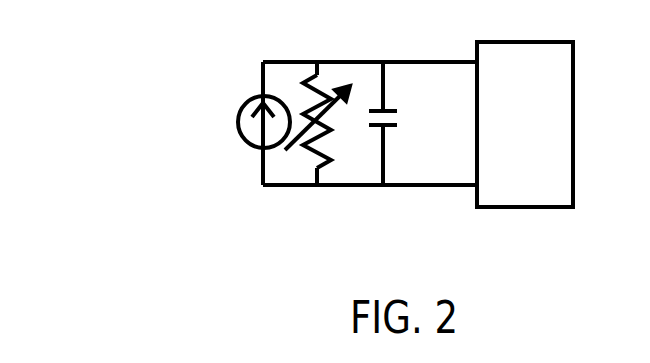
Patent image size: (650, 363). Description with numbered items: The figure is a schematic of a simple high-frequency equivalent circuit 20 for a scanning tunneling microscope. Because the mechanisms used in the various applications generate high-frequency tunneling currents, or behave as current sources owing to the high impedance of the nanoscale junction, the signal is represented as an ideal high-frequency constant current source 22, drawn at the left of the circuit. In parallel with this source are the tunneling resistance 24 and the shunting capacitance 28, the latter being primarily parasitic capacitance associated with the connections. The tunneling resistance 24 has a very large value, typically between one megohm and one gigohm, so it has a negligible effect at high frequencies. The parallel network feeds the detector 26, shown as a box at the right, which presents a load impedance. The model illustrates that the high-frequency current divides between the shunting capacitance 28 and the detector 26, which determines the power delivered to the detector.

The high-frequency equivalent circuit 20 is at (157, 135).
The high-frequency constant current source 22 is at (251, 124).
The tunneling resistance 24 is at (320, 123).
The detector 26 is at (537, 157).
The shunting capacitance 28 is at (395, 123).